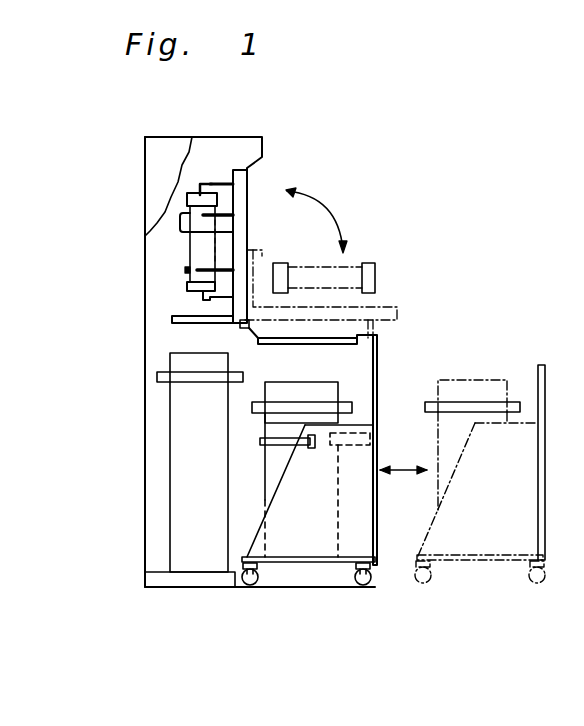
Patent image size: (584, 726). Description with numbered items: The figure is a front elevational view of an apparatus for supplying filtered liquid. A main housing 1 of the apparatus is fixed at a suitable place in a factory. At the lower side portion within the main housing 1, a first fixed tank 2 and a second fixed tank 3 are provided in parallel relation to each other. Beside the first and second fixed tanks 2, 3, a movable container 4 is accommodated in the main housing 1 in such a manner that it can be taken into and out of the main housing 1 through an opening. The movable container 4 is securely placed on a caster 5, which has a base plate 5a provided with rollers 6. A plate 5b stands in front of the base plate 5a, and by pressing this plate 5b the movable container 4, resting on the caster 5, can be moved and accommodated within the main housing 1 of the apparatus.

The main housing 1 is at (145, 293).
The first fixed tank 2 is at (146, 470).
The second fixed tank 3 is at (183, 438).
The movable container 4 is at (336, 390).
The caster 5 is at (257, 536).
The base plate 5a is at (303, 562).
The plate 5b is at (377, 428).
The rollers 6 is at (250, 587).